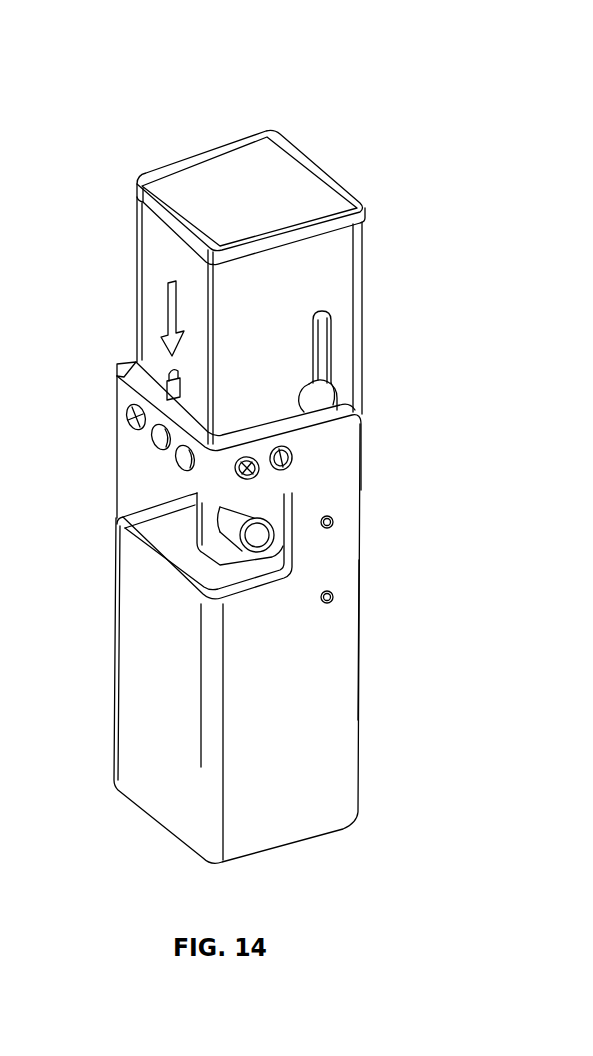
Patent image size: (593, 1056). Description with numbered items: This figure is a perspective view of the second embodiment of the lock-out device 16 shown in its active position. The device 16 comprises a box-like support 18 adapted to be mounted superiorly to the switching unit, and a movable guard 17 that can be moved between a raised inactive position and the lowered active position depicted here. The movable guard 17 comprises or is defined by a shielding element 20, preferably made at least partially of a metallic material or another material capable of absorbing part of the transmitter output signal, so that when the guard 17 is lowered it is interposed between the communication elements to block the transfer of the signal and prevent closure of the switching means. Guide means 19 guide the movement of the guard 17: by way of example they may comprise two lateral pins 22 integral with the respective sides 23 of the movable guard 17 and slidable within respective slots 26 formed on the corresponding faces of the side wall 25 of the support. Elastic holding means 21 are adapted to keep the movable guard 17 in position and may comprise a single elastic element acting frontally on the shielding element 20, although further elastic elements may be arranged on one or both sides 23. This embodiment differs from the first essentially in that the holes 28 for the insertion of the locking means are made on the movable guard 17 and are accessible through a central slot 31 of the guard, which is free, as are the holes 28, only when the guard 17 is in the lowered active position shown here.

The lock-out device 16 is at (349, 146).
The movable guard 17 is at (117, 362).
The box-like support 18 is at (220, 167).
The guide means 19 is at (333, 344).
The shielding element 20 is at (133, 663).
The elastic holding means 21 is at (217, 522).
The lateral pins 22 is at (332, 597).
The sides 23 is at (337, 678).
The side wall 25 is at (147, 262).
The slots 26 is at (320, 360).
The holes 28 is at (185, 470).
The central slot 31 is at (142, 535).